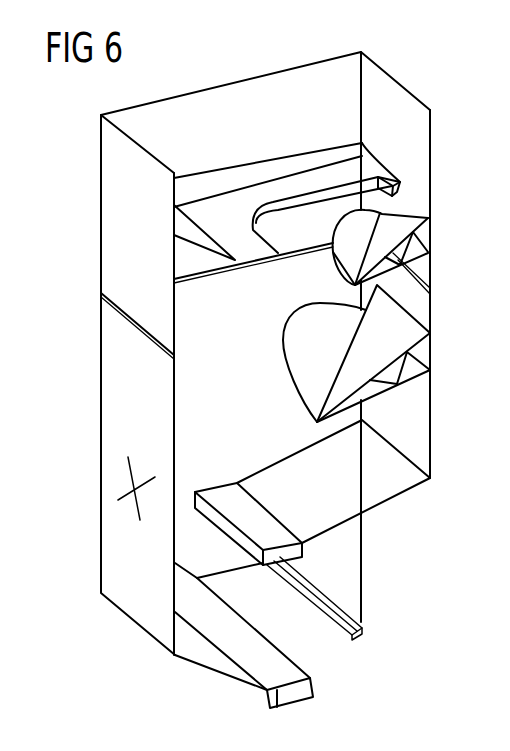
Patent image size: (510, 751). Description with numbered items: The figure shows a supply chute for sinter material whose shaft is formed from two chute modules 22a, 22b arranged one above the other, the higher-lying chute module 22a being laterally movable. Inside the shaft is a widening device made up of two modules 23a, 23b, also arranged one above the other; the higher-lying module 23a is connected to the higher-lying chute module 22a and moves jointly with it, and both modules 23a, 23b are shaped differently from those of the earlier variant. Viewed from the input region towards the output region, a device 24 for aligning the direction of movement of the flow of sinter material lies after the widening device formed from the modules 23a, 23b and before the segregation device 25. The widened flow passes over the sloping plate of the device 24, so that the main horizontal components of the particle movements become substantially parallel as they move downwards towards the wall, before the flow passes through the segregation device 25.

The higher-lying chute module 22a is at (93, 111).
The lower chute module 22b is at (93, 298).
The higher-lying module of the widening device 23a is at (372, 255).
The lower module of the widening device 23b is at (352, 363).
The device for aligning the direction of movement of the flow of sinter material 24 is at (370, 495).
The segregation device 25 is at (210, 658).